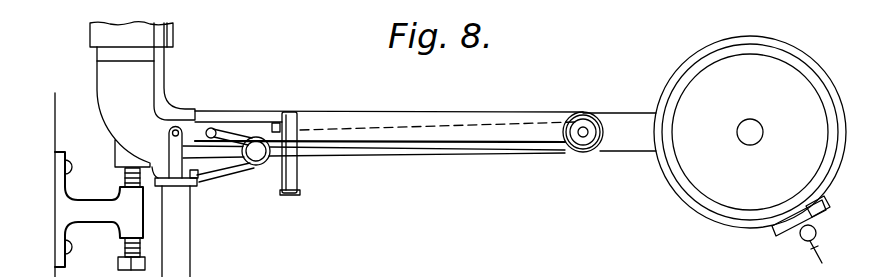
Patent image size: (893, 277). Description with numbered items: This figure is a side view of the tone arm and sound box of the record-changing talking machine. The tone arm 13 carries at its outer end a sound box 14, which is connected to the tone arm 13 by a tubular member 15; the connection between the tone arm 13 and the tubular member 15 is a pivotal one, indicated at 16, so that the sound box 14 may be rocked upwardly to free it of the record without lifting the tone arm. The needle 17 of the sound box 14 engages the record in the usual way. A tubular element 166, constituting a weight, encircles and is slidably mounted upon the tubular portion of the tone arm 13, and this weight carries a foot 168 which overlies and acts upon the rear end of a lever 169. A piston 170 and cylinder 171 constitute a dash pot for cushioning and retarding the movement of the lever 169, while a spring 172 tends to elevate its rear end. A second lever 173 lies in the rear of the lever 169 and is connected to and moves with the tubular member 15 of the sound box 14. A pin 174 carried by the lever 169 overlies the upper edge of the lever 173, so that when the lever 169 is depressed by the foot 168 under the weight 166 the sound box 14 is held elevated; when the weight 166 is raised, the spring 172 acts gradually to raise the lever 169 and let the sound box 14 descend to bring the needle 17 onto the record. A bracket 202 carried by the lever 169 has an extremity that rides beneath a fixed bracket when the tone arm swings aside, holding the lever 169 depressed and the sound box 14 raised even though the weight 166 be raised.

The tone arm 13 is at (496, 117).
The sound box 14 is at (750, 132).
The tubular member 15 is at (637, 143).
The pivotal connection 16 is at (585, 124).
The needle 17 is at (814, 250).
The tubular element 166 is at (90, 33).
The foot 168 is at (158, 77).
The lever 169 is at (257, 125).
The piston 170 is at (169, 151).
The cylinder 171 is at (178, 239).
The spring 172 is at (235, 170).
The second lever 173 is at (339, 151).
The pin 174 is at (293, 113).
The bracket 202 is at (298, 193).